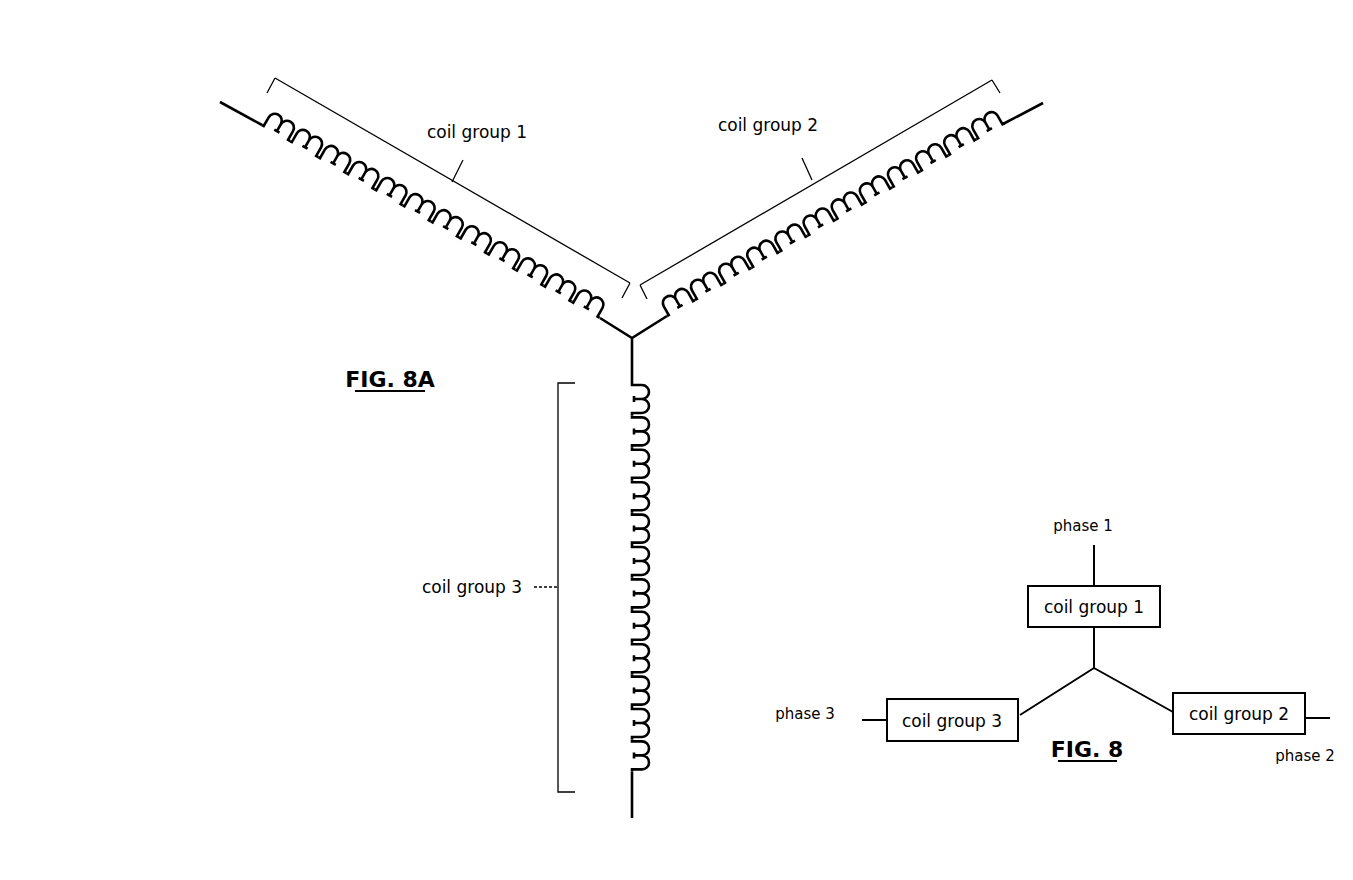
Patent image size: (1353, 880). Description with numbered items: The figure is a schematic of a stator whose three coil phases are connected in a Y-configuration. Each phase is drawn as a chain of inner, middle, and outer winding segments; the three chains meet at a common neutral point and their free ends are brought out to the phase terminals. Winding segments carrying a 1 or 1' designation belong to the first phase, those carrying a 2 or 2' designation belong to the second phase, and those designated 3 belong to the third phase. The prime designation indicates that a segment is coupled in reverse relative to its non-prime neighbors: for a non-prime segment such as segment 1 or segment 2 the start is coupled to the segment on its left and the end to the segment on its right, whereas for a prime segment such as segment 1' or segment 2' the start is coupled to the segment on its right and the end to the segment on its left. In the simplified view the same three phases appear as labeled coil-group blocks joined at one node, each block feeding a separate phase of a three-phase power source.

The first phase winding segment 1 is at (396, 208).
The reverse-coupled first phase winding segment 1' is at (419, 215).
The second phase winding segment 2 is at (870, 207).
The reverse-coupled second phase winding segment 2' is at (874, 198).
The third phase winding segment 3 is at (652, 631).